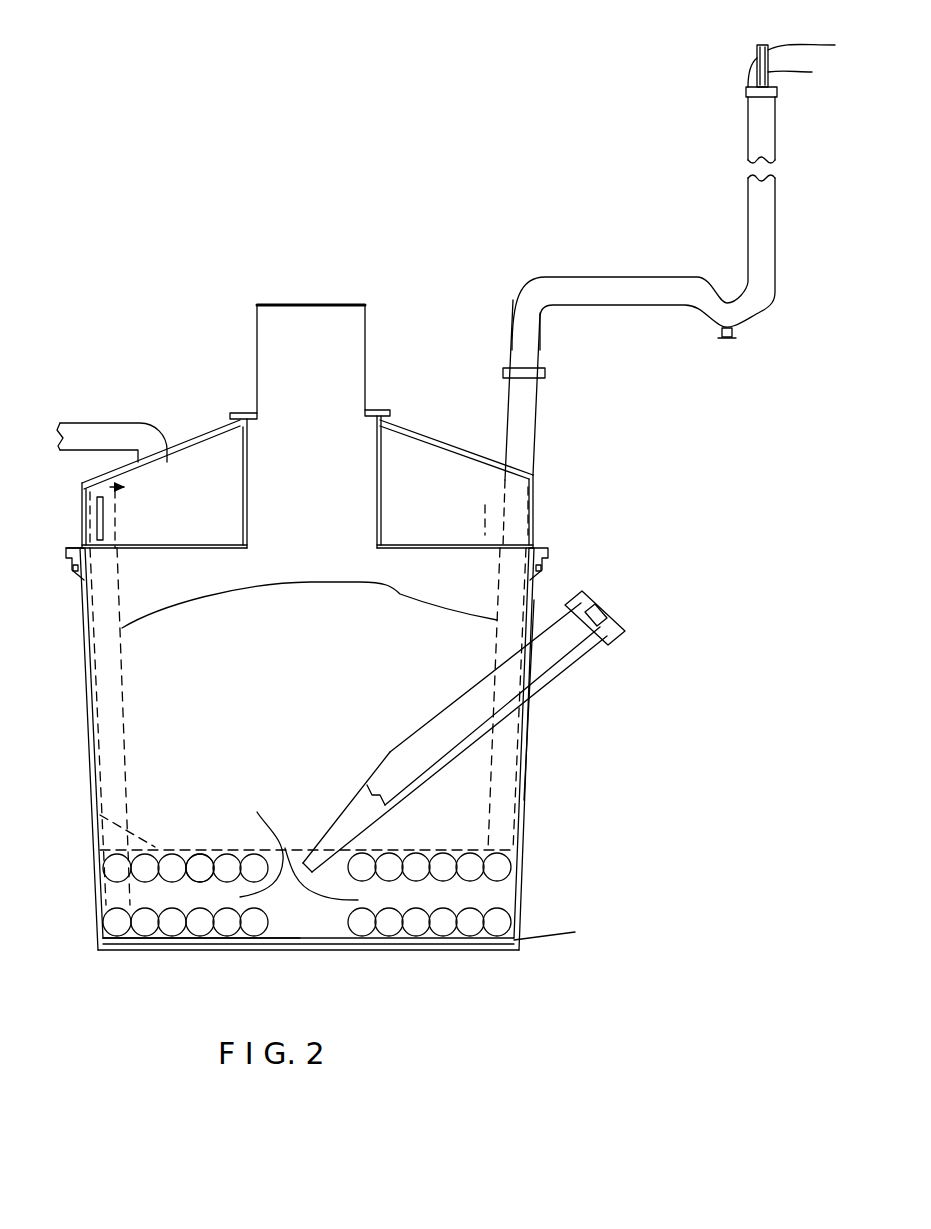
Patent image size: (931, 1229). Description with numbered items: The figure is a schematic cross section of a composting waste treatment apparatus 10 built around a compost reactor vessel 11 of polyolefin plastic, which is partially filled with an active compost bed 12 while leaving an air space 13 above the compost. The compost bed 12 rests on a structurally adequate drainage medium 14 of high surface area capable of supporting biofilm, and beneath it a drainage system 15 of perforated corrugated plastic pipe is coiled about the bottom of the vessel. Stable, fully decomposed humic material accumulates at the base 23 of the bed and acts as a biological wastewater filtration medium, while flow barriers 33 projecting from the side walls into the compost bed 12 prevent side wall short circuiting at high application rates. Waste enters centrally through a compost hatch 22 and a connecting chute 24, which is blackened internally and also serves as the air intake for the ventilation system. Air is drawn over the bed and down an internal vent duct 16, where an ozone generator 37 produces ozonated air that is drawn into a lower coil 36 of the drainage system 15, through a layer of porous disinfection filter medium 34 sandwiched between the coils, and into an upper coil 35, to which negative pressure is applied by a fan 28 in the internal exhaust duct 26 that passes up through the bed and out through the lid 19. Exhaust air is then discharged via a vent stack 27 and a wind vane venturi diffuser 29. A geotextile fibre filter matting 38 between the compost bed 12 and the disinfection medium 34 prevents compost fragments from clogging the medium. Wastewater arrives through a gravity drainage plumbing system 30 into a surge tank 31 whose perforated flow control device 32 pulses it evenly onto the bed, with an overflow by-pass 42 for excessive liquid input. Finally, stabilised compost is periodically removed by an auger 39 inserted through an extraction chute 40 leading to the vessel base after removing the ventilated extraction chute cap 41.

The waste treatment apparatus 10 is at (133, 266).
The compost reactor vessel 11 is at (522, 767).
The compost bed 12 is at (428, 828).
The air space 13 is at (447, 580).
The drainage medium 14 is at (327, 932).
The drainage system 15 is at (163, 935).
The internal vent duct 16 is at (88, 733).
The lid 19 is at (218, 425).
The compost hatch 22 is at (270, 302).
The base of the compost bed 23 is at (92, 808).
The connecting chute 24 is at (360, 380).
The internal exhaust duct 26 is at (530, 727).
The vent stack 27 is at (740, 194).
The fan 28 is at (547, 372).
The wind vane venturi diffuser 29 is at (752, 66).
The gravity drainage plumbing system 30 is at (93, 423).
The surge tank 31 is at (84, 486).
The flow control device 32 is at (150, 553).
The flow barriers 33 is at (105, 755).
The disinfection filter medium 34 is at (280, 845).
The upper coil 35 is at (205, 850).
The lower coil 36 is at (253, 940).
The ozone generator 37 is at (103, 517).
The geotextile fibre filter matting 38 is at (305, 846).
The auger 39 is at (573, 647).
The extraction chute 40 is at (567, 605).
The extraction chute cap 41 is at (617, 608).
The overflow by-pass 42 is at (500, 507).